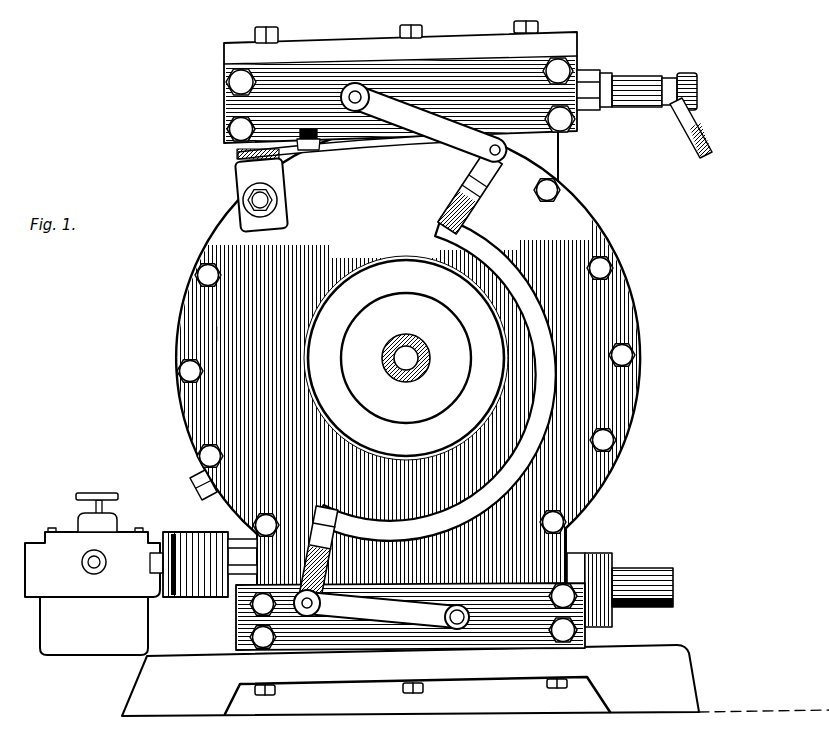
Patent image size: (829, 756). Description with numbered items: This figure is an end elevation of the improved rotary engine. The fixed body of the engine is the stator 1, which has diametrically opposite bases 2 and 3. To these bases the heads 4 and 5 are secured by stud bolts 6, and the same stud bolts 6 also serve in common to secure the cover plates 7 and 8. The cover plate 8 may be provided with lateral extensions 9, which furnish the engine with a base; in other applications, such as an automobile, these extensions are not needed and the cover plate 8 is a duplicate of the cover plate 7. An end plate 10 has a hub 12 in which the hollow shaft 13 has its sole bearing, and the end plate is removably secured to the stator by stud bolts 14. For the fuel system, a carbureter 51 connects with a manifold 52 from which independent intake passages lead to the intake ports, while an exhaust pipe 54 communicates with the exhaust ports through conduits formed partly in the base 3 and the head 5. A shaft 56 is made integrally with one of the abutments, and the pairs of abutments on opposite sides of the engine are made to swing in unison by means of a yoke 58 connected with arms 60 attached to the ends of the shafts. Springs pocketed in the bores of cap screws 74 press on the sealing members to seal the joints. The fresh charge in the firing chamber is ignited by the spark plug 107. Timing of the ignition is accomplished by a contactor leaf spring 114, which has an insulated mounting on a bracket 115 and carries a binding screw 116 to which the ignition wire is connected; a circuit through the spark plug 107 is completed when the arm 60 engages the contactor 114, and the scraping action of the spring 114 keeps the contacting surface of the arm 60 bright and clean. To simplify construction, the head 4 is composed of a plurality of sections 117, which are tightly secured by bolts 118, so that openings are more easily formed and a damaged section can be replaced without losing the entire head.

The stator 1 is at (637, 314).
The base 2 is at (565, 169).
The base 3 is at (574, 533).
The head 4 is at (576, 126).
The head 5 is at (570, 623).
The stud bolts 6 is at (256, 34).
The cover plate 7 is at (561, 43).
The cover plate 8 is at (492, 670).
The lateral extensions 9 is at (672, 685).
The end plate 10 is at (217, 328).
The hub 12 is at (356, 384).
The hollow shaft 13 is at (416, 373).
The stud bolts 14 is at (608, 264).
The carbureter 51 is at (120, 547).
The manifold 52 is at (187, 597).
The exhaust pipe 54 is at (648, 573).
The shaft 56 is at (458, 614).
The yoke 58 is at (507, 273).
The arm 60 is at (411, 115).
The cap screw 74 is at (413, 27).
The spark plug 107 is at (628, 88).
The leaf spring 114 is at (353, 152).
The bracket 115 is at (240, 180).
The binding screw 116 is at (308, 129).
The sections 117 is at (243, 104).
The bolts 118 is at (240, 81).